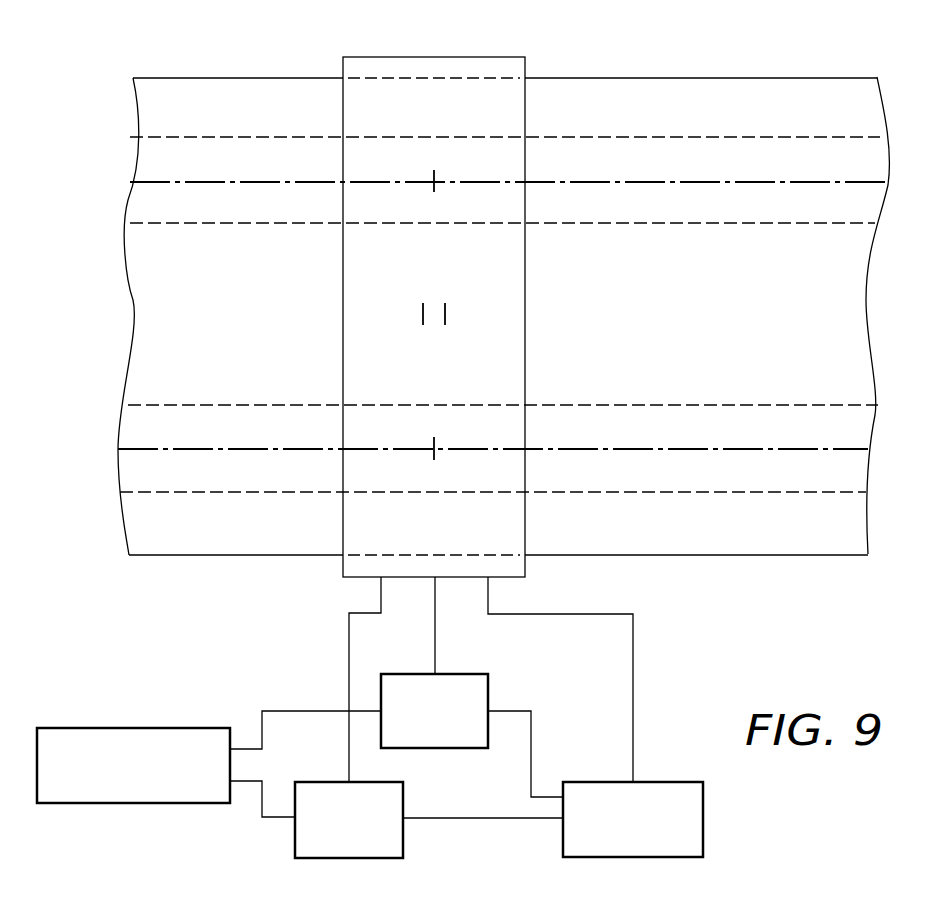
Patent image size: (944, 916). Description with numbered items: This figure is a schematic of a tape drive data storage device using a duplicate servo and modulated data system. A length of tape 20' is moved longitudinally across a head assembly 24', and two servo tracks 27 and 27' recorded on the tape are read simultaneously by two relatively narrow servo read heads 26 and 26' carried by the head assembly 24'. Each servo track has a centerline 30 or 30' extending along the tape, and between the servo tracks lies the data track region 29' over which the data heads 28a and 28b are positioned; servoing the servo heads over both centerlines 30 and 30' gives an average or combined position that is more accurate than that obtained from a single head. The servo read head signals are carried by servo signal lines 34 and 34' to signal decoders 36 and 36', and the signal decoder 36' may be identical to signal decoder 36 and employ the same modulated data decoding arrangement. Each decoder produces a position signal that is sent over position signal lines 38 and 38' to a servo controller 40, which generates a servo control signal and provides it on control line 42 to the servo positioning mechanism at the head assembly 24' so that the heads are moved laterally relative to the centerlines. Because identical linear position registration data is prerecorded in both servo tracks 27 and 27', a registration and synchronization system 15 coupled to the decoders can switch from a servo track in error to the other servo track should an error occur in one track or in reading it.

The tape 20' is at (503, 291).
The head assembly 24' is at (434, 290).
The servo read head 26' is at (404, 169).
The servo read head 26 is at (406, 439).
The servo track 27' is at (505, 181).
The servo track 27 is at (499, 450).
The data head 28a is at (421, 311).
The data head 28b is at (447, 311).
The data track region 29' is at (472, 314).
The servo track centerline 30' is at (525, 207).
The servo track centerline 30 is at (518, 425).
The servo signal line 34 is at (338, 679).
The servo signal line 34' is at (468, 625).
The signal decoder 36 is at (322, 822).
The signal decoder 36' is at (434, 740).
The position signal line 38 is at (483, 847).
The position signal line 38' is at (538, 754).
The servo controller 40 is at (704, 825).
The control line 42 is at (634, 700).
The registration and synchronization system 15 is at (131, 803).